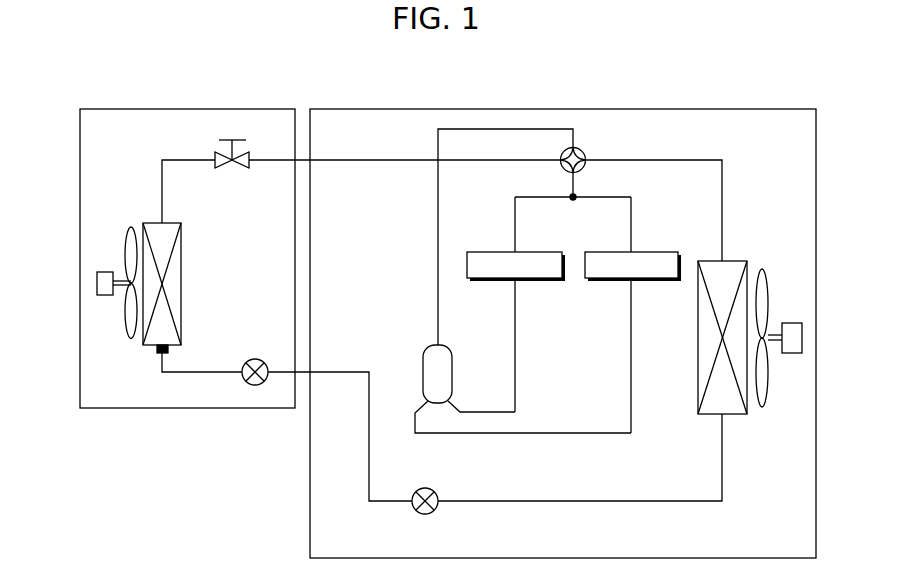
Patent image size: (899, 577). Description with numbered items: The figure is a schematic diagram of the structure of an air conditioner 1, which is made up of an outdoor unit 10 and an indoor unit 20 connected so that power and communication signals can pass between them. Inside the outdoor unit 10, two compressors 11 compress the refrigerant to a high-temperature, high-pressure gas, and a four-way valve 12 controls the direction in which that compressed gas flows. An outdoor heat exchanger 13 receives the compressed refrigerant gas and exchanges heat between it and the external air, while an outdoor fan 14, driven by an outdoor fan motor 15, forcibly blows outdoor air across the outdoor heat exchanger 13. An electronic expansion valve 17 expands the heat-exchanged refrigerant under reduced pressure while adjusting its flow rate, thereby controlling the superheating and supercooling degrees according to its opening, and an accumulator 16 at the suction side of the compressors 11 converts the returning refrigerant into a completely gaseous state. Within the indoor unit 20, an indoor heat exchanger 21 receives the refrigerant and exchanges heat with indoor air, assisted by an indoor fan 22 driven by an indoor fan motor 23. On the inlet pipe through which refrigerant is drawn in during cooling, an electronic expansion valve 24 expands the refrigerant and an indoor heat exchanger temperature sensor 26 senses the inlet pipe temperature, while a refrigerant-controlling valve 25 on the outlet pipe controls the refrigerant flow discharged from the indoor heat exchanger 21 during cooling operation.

The air conditioner 1 is at (287, 83).
The outdoor unit 10 is at (742, 108).
The compressor 11 is at (546, 252).
The four-way valve 12 is at (582, 152).
The outdoor heat exchanger 13 is at (736, 262).
The outdoor fan 14 is at (761, 269).
The outdoor fan motor 15 is at (791, 323).
The accumulator 16 is at (452, 373).
The electronic expansion valve 17 is at (426, 488).
The indoor unit 20 is at (80, 258).
The indoor heat exchanger 21 is at (181, 285).
The indoor fan 22 is at (131, 227).
The indoor fan motor 23 is at (105, 272).
The electronic expansion valve 24 is at (255, 359).
The refrigerant-controlling valve 25 is at (240, 170).
The indoor heat exchanger temperature sensor 26 is at (170, 350).